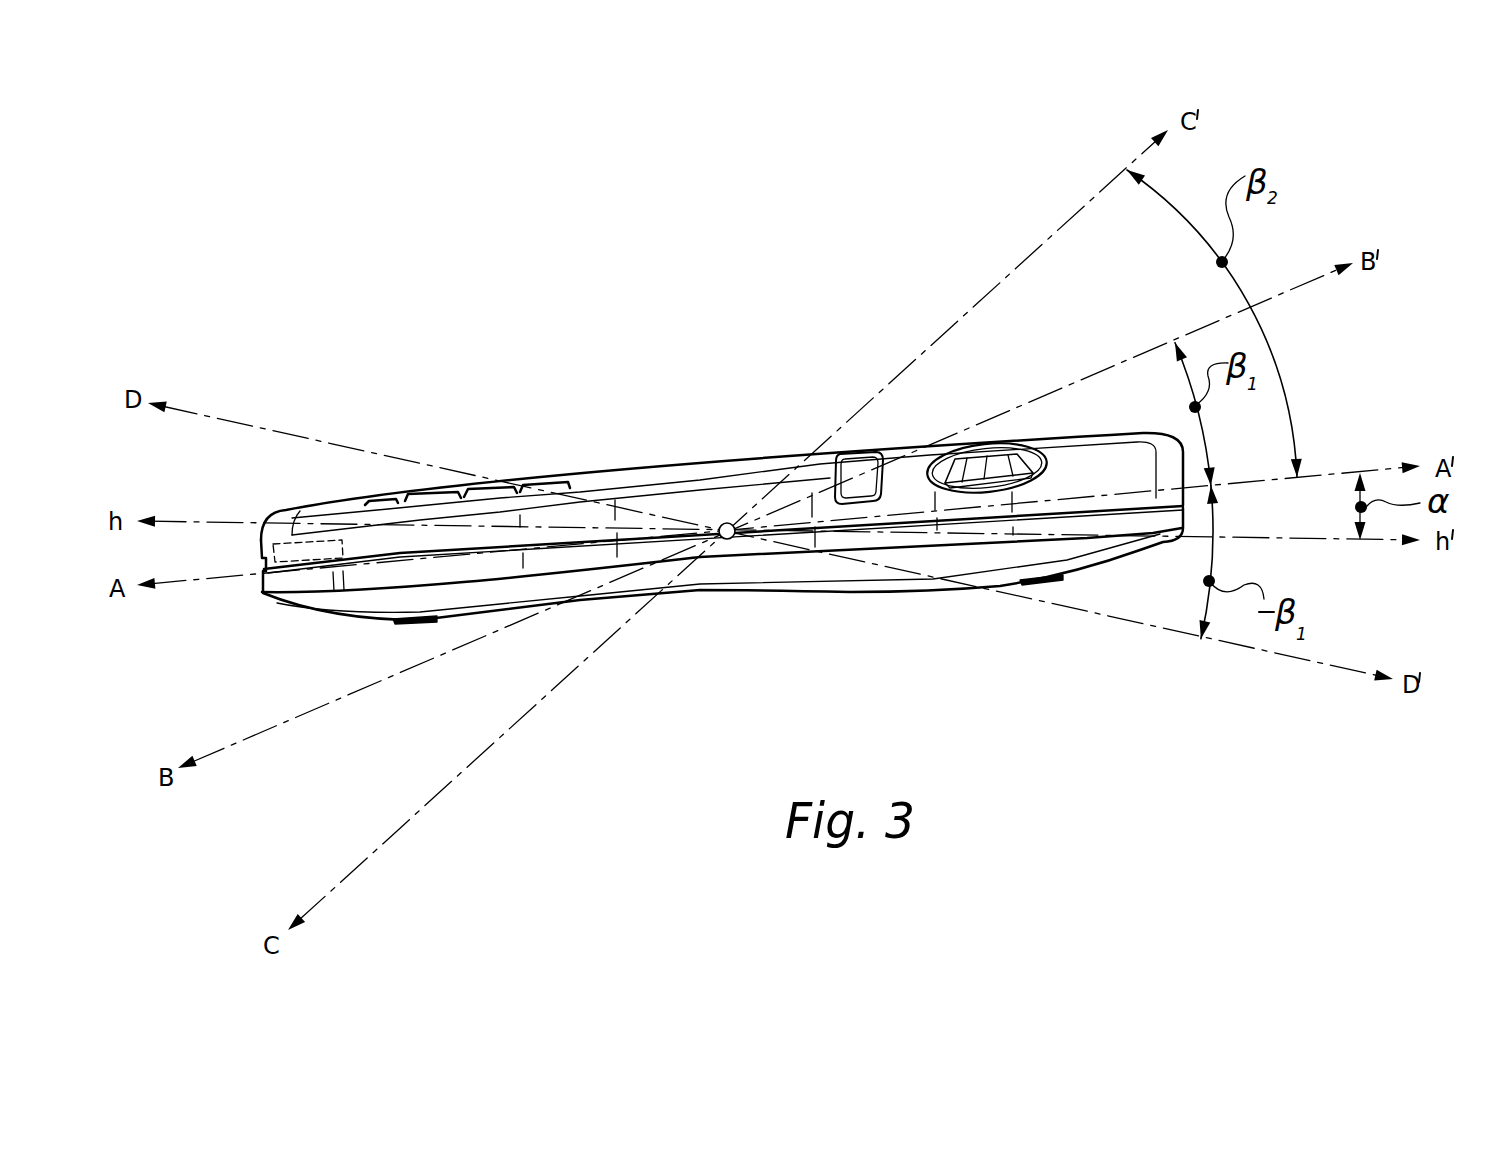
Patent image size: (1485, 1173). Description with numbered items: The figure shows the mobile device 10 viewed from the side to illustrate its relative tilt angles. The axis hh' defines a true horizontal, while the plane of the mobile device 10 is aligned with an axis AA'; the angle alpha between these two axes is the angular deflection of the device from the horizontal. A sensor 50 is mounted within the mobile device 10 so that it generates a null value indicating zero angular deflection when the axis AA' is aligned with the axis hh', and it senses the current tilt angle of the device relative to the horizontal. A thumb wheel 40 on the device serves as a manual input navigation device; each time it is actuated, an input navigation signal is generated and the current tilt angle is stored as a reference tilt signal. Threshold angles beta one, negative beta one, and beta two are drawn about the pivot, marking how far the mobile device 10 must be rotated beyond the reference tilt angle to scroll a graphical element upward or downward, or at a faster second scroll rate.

The mobile device 10 is at (707, 466).
The thumb wheel 40 is at (1000, 454).
The sensor 50 is at (272, 563).